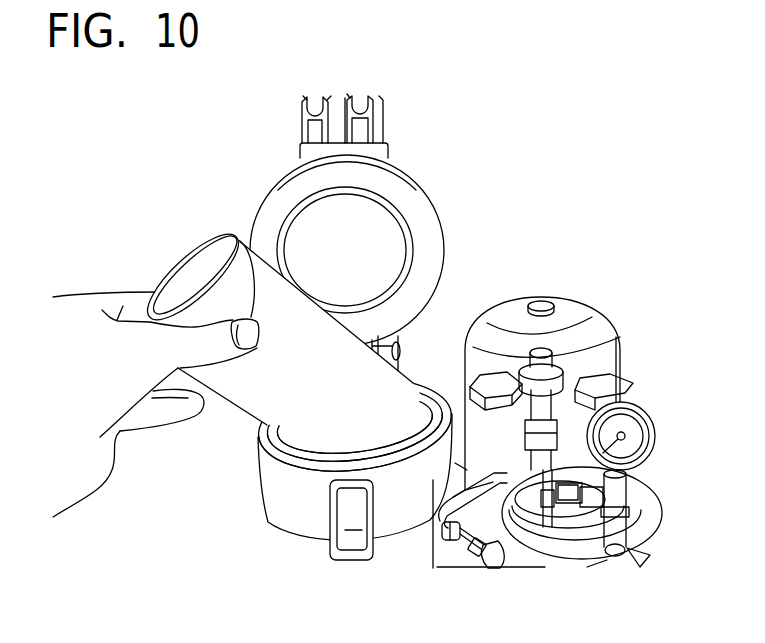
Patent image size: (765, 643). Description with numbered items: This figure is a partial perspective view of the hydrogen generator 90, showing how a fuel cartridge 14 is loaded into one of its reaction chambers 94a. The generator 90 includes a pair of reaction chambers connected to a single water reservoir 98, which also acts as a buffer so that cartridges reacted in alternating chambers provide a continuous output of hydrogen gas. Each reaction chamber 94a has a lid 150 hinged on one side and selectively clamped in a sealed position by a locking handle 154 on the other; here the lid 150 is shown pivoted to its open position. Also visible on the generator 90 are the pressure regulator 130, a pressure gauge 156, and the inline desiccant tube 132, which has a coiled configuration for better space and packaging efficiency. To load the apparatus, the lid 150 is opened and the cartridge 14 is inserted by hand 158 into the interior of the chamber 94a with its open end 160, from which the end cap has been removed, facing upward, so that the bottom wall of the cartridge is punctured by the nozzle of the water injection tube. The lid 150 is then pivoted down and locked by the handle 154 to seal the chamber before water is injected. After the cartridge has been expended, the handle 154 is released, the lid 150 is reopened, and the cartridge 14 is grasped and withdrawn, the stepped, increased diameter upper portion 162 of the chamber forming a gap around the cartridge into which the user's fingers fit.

The generator 90 is at (494, 147).
The water reservoir 98 is at (573, 301).
The pressure regulator 130 is at (558, 352).
The pressure gauge 156 is at (655, 418).
The inline desiccant tube 132 is at (562, 560).
The lid 150 is at (358, 261).
The locking handle 154 is at (370, 90).
The reaction chamber 94a is at (304, 513).
The stepped, increased diameter upper portion 162 is at (294, 476).
The cartridge 14 is at (242, 416).
The open end 160 is at (182, 255).
The hand 158 is at (80, 302).